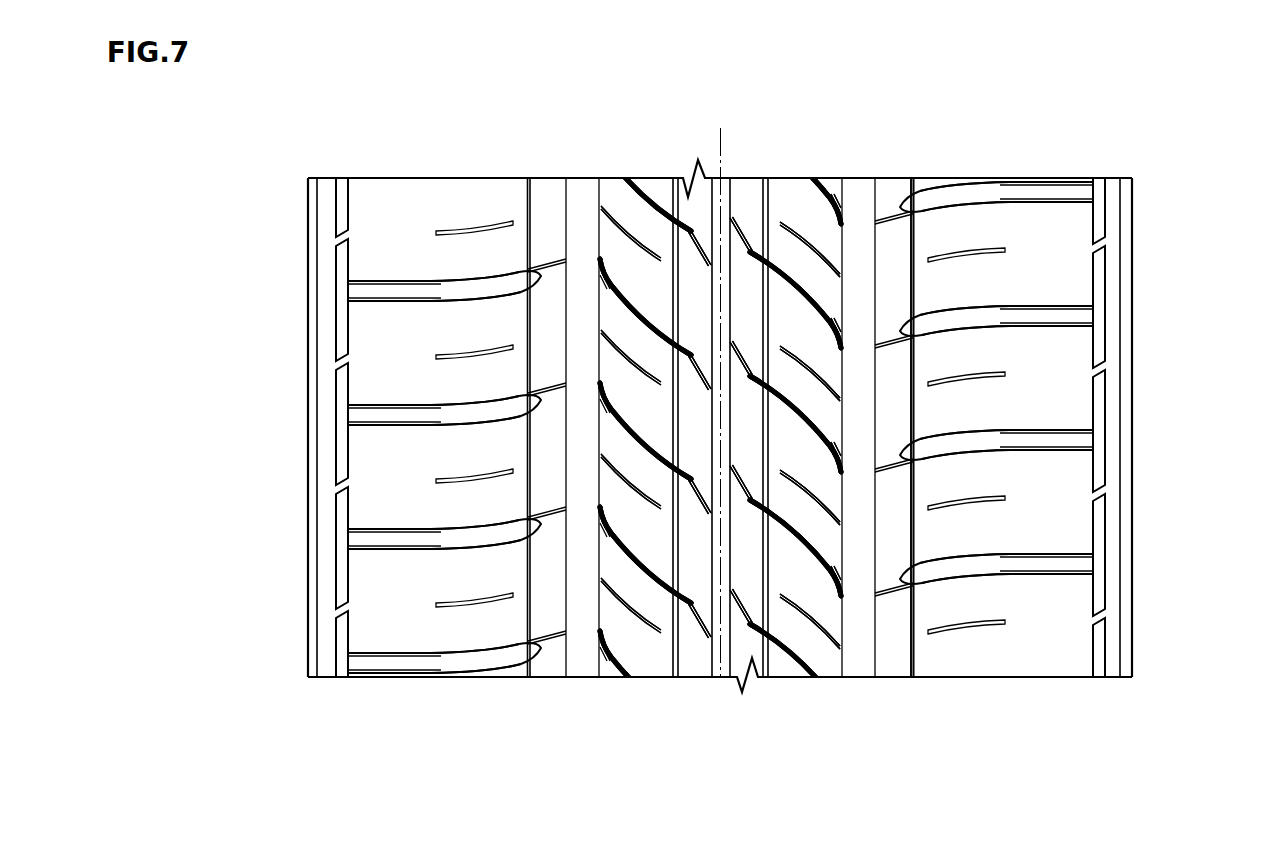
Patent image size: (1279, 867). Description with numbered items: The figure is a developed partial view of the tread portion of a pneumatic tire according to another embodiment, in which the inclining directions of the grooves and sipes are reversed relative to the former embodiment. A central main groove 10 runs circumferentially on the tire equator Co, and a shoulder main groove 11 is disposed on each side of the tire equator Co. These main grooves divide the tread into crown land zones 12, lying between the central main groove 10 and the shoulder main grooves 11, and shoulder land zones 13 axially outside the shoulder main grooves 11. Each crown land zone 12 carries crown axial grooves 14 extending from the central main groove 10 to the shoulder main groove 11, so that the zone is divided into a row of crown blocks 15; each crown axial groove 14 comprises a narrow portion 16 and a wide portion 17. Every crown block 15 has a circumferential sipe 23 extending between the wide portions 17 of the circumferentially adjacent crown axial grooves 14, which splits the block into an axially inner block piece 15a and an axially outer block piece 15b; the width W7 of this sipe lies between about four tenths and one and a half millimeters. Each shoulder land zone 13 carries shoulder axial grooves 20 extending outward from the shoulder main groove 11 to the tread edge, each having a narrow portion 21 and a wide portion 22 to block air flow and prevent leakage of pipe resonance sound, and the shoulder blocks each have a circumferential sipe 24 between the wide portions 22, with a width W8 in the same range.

The central main groove 10 is at (724, 188).
The tire equator Co is at (721, 388).
The width of the circumferential sipe 23 W7 is at (775, 153).
The width of the circumferential sipe 24 W8 is at (911, 677).
The shoulder main groove 11 is at (590, 197).
The crown land zone 12 is at (646, 209).
The shoulder land zone 13 is at (424, 204).
The crown axial groove 14 is at (733, 768).
The crown block 15 is at (832, 350).
The axially inner block piece 15a is at (800, 513).
The axially outer block piece 15b is at (748, 460).
The narrow portion 16 is at (680, 630).
The wide portion 17 is at (632, 670).
The shoulder axial groove 20 is at (415, 417).
The narrow portion 21 is at (544, 652).
The wide portion 22 is at (443, 668).
The circumferential sipe 23 is at (599, 290).
The circumferential sipe 24 is at (527, 322).